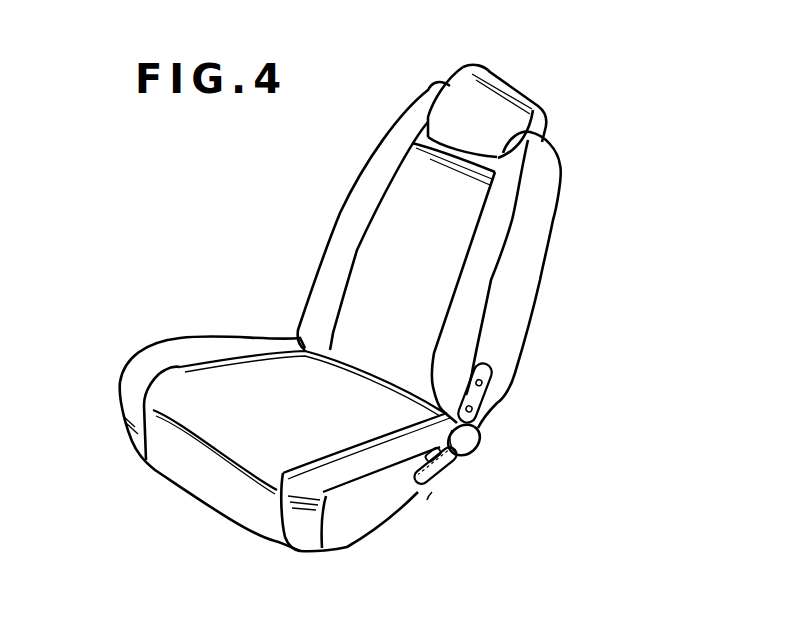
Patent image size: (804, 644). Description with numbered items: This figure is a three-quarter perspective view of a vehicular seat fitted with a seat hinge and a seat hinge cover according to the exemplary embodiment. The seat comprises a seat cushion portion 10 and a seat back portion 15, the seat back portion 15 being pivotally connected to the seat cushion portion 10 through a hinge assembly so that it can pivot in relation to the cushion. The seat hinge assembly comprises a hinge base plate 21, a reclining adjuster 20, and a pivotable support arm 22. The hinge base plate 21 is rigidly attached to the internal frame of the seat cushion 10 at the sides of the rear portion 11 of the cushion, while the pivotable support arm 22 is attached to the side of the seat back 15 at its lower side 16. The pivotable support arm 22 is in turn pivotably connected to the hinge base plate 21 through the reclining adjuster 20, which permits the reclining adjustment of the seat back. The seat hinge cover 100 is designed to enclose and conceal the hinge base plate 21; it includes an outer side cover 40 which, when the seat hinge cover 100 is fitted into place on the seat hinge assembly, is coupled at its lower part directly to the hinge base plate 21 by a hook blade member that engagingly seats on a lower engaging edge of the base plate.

The seat cushion portion 10 is at (133, 340).
The rear portion 11 is at (283, 348).
The seat back portion 15 is at (565, 174).
The lower side 16 is at (316, 307).
The reclining adjuster 20 is at (482, 455).
The hinge base plate 21 is at (427, 500).
The pivotable support arm 22 is at (492, 394).
The outer side cover 40 is at (459, 486).
The seat hinge cover 100 is at (424, 497).